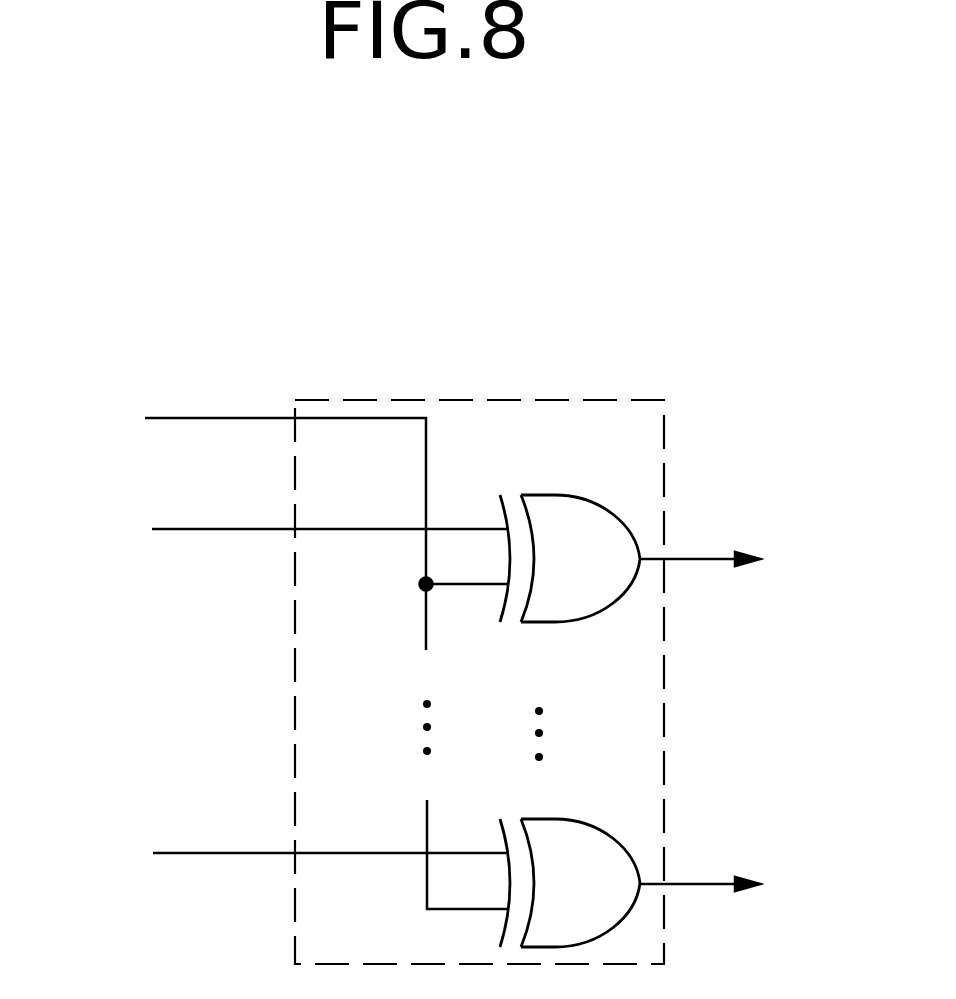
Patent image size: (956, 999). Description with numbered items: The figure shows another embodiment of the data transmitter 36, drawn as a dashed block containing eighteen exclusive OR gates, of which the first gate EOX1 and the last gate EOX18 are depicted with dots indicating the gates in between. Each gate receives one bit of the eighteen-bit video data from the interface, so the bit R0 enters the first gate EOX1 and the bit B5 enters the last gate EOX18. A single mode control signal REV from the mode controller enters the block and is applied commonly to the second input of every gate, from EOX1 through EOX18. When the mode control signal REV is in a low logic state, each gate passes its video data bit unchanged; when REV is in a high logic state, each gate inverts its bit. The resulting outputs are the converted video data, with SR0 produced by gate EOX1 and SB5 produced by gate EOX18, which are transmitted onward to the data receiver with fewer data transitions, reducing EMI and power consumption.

The data transmitter 36 is at (497, 339).
The exclusive OR gate EOX1 is at (600, 497).
The exclusive OR gate EOX18 is at (592, 821).
The mode control signal REV is at (291, 523).
The video data bit R0 is at (290, 525).
The video data bit B5 is at (290, 848).
The converted video data SR0 is at (741, 561).
The converted video data SB5 is at (736, 888).